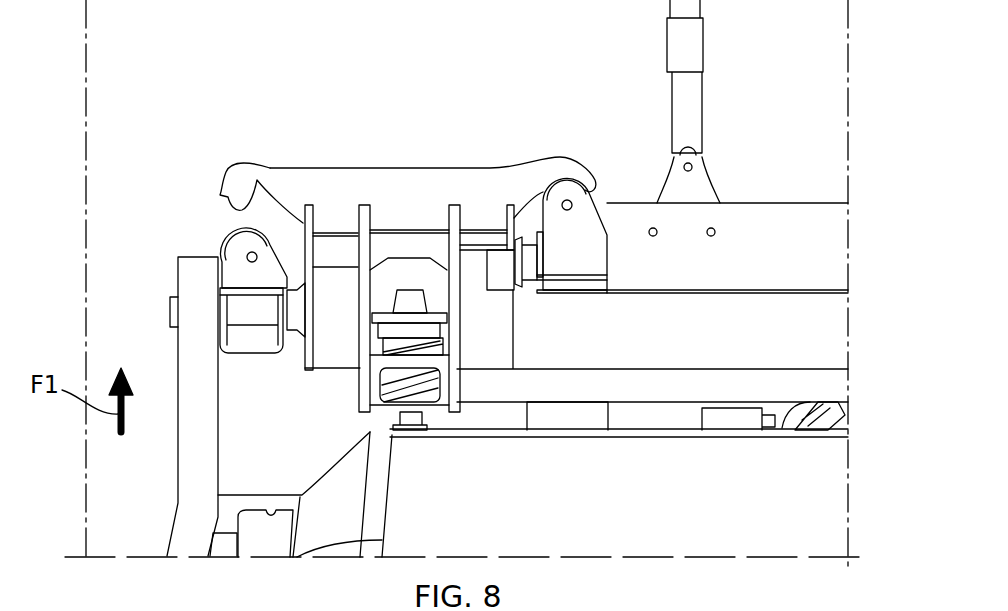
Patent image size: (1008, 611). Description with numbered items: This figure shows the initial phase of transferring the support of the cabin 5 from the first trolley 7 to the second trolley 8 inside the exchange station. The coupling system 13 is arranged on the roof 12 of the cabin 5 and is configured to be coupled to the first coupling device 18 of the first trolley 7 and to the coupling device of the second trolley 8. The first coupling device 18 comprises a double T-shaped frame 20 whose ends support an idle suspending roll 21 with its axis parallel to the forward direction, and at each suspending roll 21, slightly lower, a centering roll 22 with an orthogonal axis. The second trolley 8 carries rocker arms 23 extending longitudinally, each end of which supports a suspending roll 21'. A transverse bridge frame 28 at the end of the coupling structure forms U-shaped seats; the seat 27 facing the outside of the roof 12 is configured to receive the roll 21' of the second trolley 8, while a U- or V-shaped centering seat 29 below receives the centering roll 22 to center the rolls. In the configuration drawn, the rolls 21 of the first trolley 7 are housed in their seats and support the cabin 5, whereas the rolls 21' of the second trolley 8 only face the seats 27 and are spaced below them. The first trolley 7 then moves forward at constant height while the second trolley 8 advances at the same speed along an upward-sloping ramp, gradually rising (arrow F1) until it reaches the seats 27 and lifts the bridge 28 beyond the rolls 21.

The cabin 5 is at (815, 520).
The first trolley 7 is at (703, 117).
The second trolley 8 is at (178, 450).
The roof 12 is at (800, 402).
The coupling system 13 is at (467, 152).
The first coupling device 18 is at (724, 297).
The first double T-shaped frame 20 is at (780, 200).
The suspending roll 21 is at (584, 202).
The suspending roll 21' is at (205, 226).
The centering roll 22 is at (513, 278).
The rocker arm 23 is at (245, 325).
The U-shaped seat 27 is at (198, 197).
The transverse bridge frame 28 is at (405, 182).
The centering seat 29 is at (465, 270).